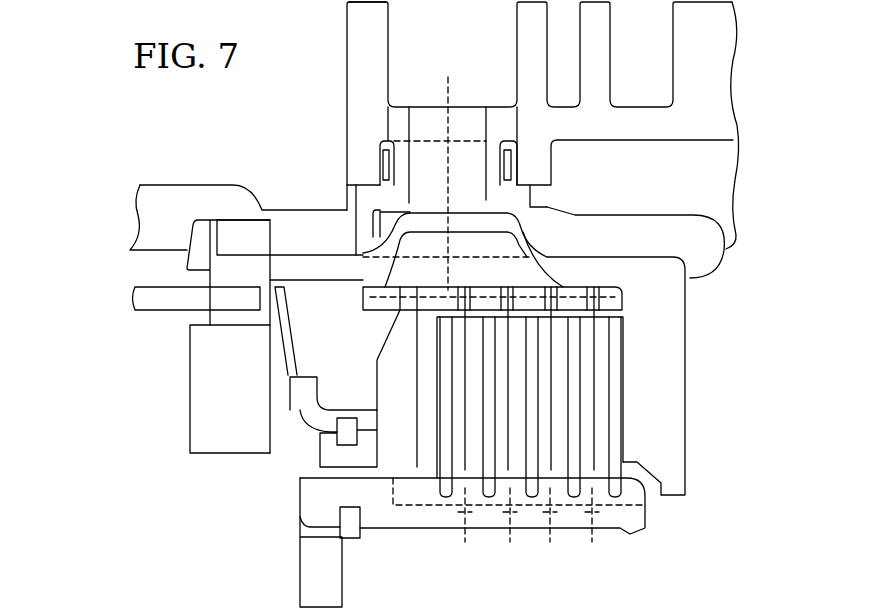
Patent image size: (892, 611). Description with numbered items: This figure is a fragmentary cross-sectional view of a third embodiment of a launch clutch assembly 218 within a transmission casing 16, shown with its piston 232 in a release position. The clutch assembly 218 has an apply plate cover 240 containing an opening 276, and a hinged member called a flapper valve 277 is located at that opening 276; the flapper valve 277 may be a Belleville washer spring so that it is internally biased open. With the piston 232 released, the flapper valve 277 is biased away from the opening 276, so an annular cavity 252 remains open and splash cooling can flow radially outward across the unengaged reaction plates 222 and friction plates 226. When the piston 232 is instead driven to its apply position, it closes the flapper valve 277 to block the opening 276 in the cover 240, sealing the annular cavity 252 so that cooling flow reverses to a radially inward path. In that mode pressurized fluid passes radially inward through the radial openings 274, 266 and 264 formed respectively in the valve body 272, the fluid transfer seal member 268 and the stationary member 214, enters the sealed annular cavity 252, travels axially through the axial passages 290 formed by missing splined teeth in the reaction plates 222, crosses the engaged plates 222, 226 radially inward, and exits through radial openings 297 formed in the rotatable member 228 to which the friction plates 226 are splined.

The casing 16 is at (683, 230).
The stationary member 214 is at (588, 277).
The clutch assembly 218 is at (735, 493).
The reaction plates 222 is at (594, 386).
The friction plates 226 is at (622, 472).
The rotatable member 228 is at (298, 572).
The piston 232 is at (160, 312).
The apply plate cover 240 is at (300, 415).
The annular cavity 252 is at (349, 378).
The radial opening 264 is at (456, 257).
The radial opening 266 is at (477, 173).
The fluid transfer seal member 268 is at (531, 197).
The valve body 272 is at (383, 25).
The radial opening 274 is at (410, 127).
The opening 276 is at (317, 375).
The flapper valve 277 is at (283, 355).
The axial passages 290 is at (603, 283).
The radial openings 297 is at (583, 530).